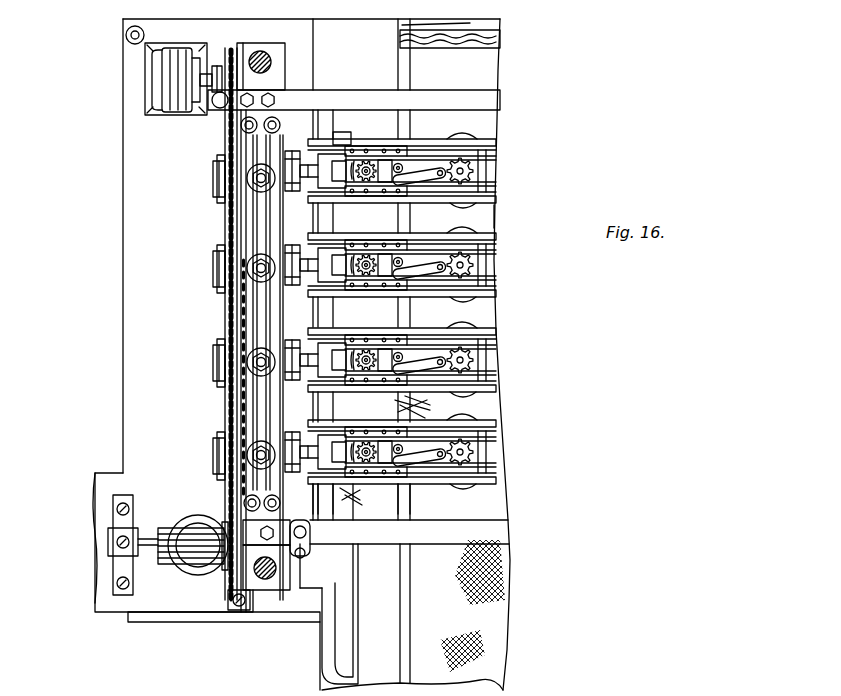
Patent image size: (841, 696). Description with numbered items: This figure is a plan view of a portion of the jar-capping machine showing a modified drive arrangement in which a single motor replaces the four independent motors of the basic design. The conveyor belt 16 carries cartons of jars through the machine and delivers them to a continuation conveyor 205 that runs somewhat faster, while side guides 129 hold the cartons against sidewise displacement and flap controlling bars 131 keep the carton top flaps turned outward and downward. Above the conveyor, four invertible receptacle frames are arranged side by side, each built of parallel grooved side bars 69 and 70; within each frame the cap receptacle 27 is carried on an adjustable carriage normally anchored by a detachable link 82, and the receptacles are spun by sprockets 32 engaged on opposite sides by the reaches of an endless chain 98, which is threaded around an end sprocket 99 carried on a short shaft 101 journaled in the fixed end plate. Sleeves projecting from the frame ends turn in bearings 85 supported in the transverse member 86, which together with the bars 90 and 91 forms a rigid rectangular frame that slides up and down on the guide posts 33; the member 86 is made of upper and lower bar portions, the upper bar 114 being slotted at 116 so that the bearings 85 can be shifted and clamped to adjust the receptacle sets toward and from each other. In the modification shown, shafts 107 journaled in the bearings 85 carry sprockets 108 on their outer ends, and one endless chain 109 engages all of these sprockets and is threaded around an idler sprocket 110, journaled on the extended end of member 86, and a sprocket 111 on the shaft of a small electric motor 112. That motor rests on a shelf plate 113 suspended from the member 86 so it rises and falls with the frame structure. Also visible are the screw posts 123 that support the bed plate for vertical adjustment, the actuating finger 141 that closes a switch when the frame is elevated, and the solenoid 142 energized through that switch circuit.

The conveyor belt 16 is at (500, 590).
The receptacle 27 is at (468, 138).
The sprocket 32 is at (498, 170).
The guide post 33 is at (268, 58).
The side bar 69 is at (518, 492).
The side bar 70 is at (496, 138).
The link 82 is at (420, 172).
The bearing 85 is at (293, 150).
The transverse member 86 is at (286, 318).
The bar 90 is at (480, 96).
The bar 91 is at (485, 530).
The endless chain 98 is at (494, 228).
The end sprocket 99 is at (370, 182).
The short shaft 101 is at (367, 348).
The shaft 107 is at (352, 165).
The sprocket 108 is at (216, 180).
The endless chain 109 is at (224, 132).
The idler sprocket 110 is at (232, 584).
The sprocket 111 is at (222, 64).
The electric motor 112 is at (162, 78).
The shelf plate 113 is at (165, 112).
The upper bar 114 is at (240, 398).
The slot 116 is at (255, 222).
The screw post 123 is at (125, 37).
The side guide 129 is at (410, 586).
The flap controlling bar 131 is at (347, 630).
The actuating finger 141 is at (306, 550).
The solenoid 142 is at (205, 512).
The continuation conveyor 205 is at (490, 31).